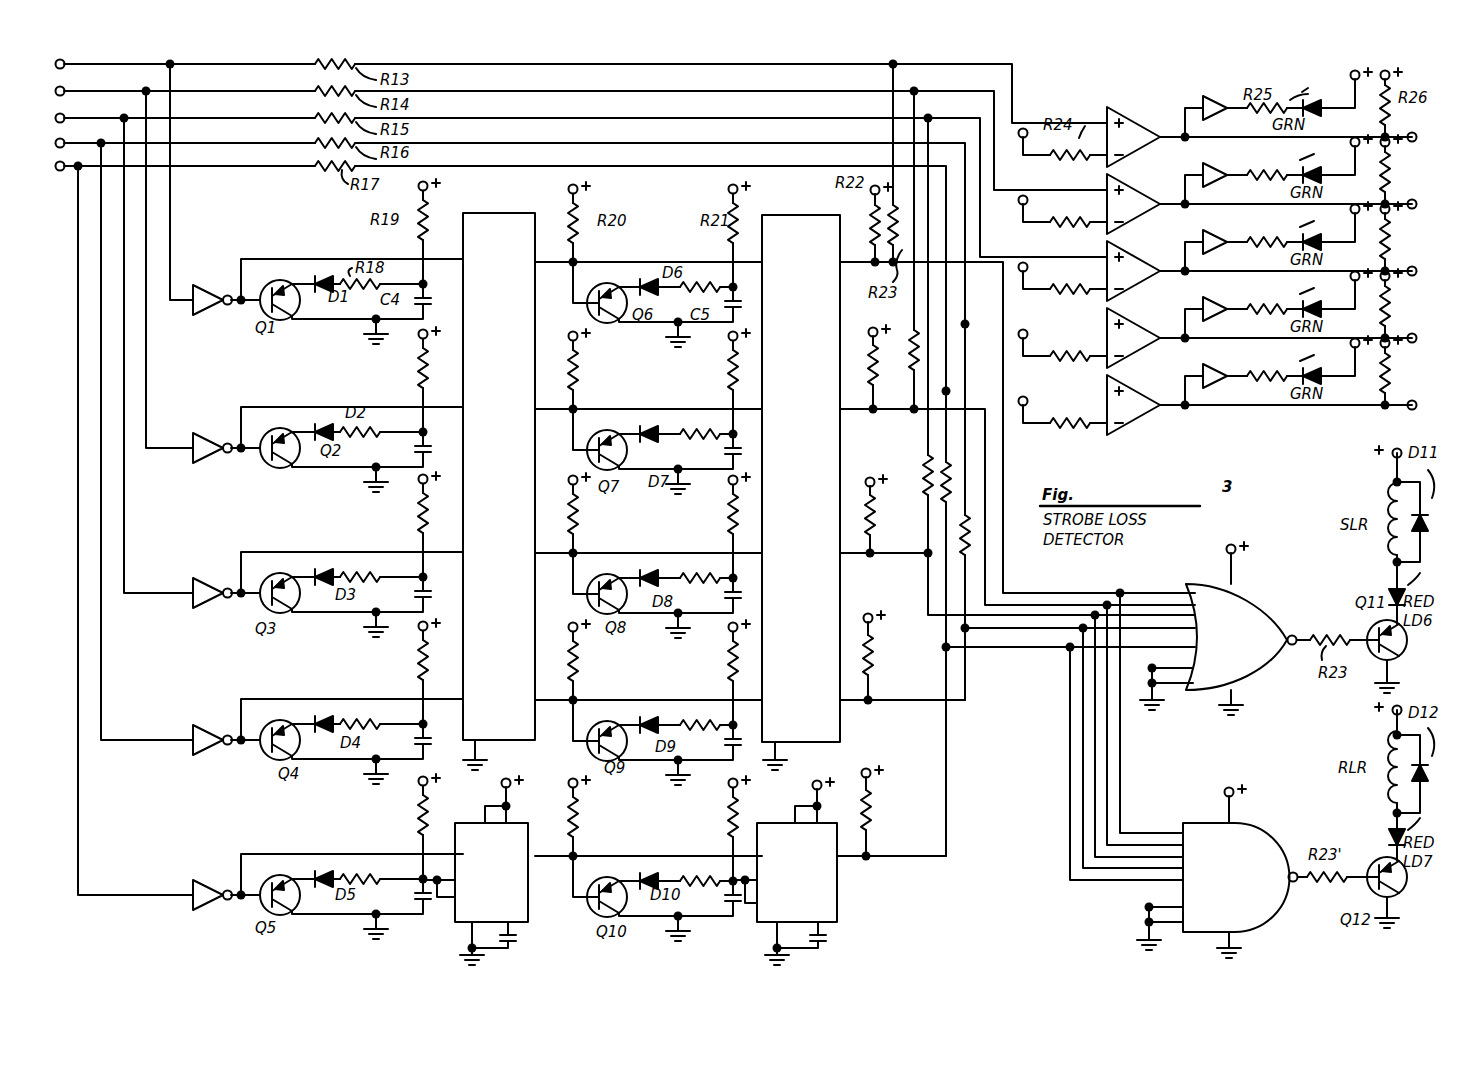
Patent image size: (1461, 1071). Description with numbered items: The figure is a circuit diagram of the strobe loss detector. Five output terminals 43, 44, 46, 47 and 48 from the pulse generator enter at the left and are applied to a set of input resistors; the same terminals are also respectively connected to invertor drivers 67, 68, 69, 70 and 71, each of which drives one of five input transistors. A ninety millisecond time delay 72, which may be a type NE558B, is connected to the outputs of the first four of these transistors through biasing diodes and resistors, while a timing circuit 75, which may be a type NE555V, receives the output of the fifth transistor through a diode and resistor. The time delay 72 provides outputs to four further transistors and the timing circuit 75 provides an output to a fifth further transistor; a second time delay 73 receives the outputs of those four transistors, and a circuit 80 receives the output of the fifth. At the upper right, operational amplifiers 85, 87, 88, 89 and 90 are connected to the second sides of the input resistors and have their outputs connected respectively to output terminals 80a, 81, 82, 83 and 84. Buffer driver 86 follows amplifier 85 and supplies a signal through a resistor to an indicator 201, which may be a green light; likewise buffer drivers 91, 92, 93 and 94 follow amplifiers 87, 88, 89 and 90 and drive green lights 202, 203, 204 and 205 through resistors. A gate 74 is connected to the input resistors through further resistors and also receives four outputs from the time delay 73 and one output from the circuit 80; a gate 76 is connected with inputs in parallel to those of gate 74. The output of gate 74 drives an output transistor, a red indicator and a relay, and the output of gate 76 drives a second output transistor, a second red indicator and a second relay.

The output terminal 43 is at (65, 61).
The output terminal 44 is at (65, 88).
The output terminal 46 is at (65, 115).
The output terminal 47 is at (65, 140).
The output terminal 48 is at (58, 171).
The invertor driver 67 is at (216, 282).
The invertor driver 68 is at (216, 430).
The invertor driver 69 is at (216, 575).
The invertor driver 70 is at (216, 722).
The invertor driver 71 is at (212, 891).
The time delay 72 is at (504, 215).
The time delay 73 is at (812, 203).
The gate 74 is at (1244, 602).
The timing circuit 75 is at (520, 912).
The gate 76 is at (1248, 842).
The circuit 80 is at (828, 912).
The output terminal 80a is at (1422, 128).
The output terminal 81 is at (1424, 189).
The output terminal 82 is at (1424, 256).
The output terminal 83 is at (1424, 323).
The output terminal 84 is at (1424, 390).
The operational amplifier 85 is at (1150, 104).
The buffer driver 86 is at (1222, 87).
The operational amplifier 87 is at (1150, 184).
The operational amplifier 88 is at (1150, 251).
The operational amplifier 89 is at (1150, 318).
The operational amplifier 90 is at (1150, 385).
The buffer driver 91 is at (1218, 172).
The buffer driver 92 is at (1218, 239).
The buffer driver 93 is at (1218, 306).
The buffer driver 94 is at (1218, 373).
The indicator 201 is at (1319, 109).
The green light 202 is at (1308, 170).
The green light 203 is at (1308, 237).
The green light 204 is at (1308, 304).
The green light 205 is at (1308, 371).